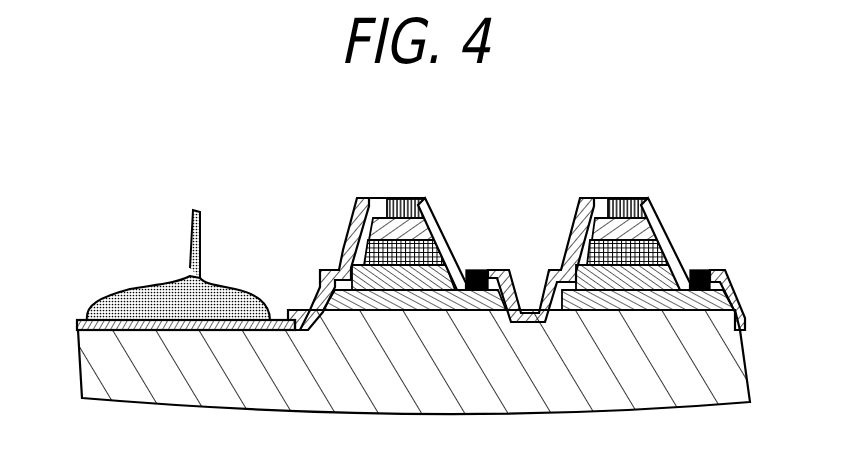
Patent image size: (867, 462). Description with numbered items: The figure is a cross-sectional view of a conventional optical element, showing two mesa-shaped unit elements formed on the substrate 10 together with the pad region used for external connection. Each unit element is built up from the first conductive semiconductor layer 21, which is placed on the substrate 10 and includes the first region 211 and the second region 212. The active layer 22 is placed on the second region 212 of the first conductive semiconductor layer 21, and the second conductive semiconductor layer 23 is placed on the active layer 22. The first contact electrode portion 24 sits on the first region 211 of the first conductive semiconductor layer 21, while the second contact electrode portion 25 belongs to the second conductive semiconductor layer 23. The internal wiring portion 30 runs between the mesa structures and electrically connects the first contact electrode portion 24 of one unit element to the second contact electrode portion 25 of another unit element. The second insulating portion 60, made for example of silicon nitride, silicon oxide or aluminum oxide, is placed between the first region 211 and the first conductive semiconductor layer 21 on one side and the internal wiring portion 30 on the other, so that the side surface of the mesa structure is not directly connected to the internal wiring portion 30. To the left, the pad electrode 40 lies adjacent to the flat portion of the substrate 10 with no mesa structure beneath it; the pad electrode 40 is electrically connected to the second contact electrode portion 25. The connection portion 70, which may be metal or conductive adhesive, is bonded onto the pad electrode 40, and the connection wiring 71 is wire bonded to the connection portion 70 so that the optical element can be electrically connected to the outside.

The substrate 10 is at (80, 360).
The pad electrode 40 is at (77, 323).
The connection portion 70 is at (212, 292).
The connection wiring 71 is at (194, 211).
The first conductive semiconductor layer 21 is at (492, 270).
The first region 211 is at (337, 300).
The second region 212 is at (345, 276).
The active layer 22 is at (368, 262).
The second conductive semiconductor layer 23 is at (375, 223).
The first contact electrode portion 24 is at (476, 290).
The second contact electrode portion 25 is at (396, 220).
The internal wiring portion 30 is at (528, 315).
The second insulating portion 60 is at (745, 323).